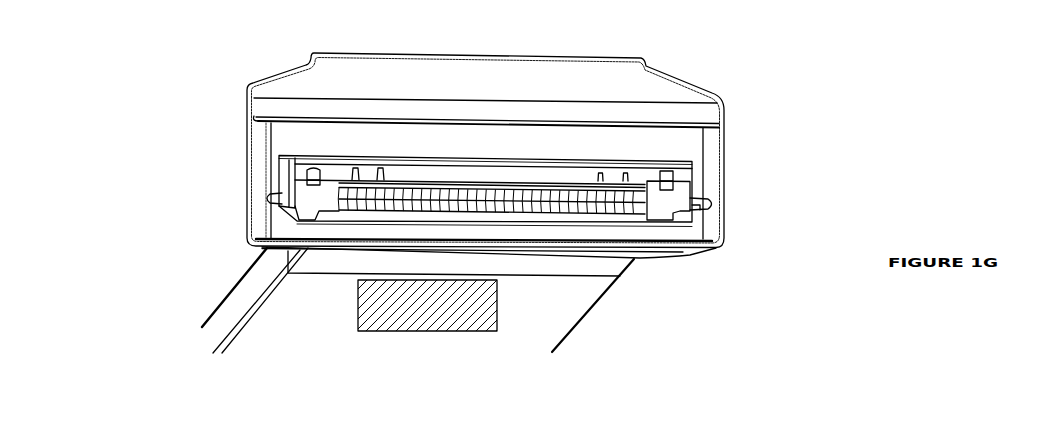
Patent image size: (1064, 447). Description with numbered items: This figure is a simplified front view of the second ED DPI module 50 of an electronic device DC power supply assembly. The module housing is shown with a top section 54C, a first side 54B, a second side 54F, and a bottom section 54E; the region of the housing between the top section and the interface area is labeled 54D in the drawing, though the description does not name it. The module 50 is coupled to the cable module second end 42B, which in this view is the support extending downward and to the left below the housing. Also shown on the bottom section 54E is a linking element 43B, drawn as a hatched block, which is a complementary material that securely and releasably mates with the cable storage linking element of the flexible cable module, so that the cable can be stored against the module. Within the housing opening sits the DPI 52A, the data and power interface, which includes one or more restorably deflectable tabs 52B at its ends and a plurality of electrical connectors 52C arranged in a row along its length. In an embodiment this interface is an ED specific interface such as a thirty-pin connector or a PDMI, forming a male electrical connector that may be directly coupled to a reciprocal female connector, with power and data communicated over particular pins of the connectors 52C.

The second ED DPI module 50 is at (722, 338).
The cable module second end 42B is at (233, 305).
The linking element 43B is at (498, 298).
The DPI 52A is at (509, 175).
The restorably deflectable tab 52B is at (713, 204).
The electrical connectors 52C is at (598, 218).
The first side 54B is at (243, 161).
The top section 54C is at (385, 71).
The housing front wall 54D is at (558, 147).
The bottom section 54E is at (318, 306).
The second side 54F is at (725, 145).